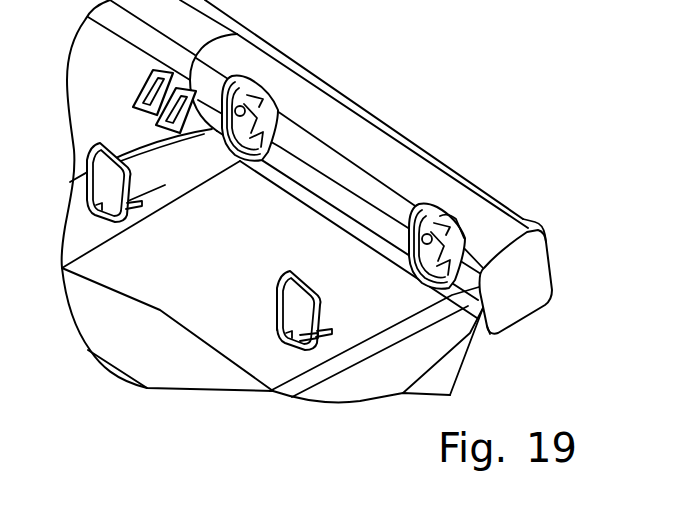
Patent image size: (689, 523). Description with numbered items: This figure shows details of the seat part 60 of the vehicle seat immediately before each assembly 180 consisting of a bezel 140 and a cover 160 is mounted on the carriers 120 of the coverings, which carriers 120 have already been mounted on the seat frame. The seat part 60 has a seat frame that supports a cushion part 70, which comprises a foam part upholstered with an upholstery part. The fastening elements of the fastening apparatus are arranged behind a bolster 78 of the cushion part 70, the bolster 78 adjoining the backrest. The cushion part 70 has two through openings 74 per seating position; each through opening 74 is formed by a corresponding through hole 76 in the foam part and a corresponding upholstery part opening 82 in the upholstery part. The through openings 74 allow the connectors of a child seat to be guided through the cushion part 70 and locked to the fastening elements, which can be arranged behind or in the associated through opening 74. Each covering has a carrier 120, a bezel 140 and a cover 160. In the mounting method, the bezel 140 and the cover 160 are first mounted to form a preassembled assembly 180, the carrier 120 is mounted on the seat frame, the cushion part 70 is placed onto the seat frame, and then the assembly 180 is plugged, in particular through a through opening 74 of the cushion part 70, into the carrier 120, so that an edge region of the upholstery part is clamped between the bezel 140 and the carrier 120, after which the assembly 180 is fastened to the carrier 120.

The seat part 60 is at (446, 130).
The cushion part 70 is at (363, 157).
The bolster 78 is at (364, 109).
The through opening 74 is at (270, 107).
The through hole 76 is at (463, 240).
The upholstery part opening 82 is at (417, 235).
The carrier 120 is at (468, 214).
The bezel 140 is at (277, 278).
The cover 160 is at (275, 292).
The preassembled assembly 180 is at (308, 351).